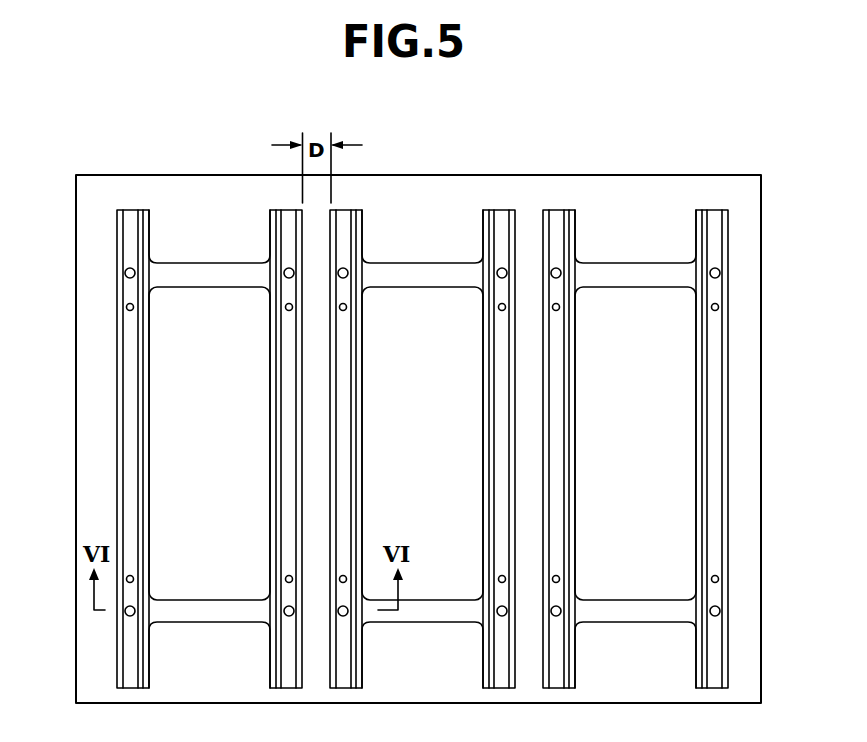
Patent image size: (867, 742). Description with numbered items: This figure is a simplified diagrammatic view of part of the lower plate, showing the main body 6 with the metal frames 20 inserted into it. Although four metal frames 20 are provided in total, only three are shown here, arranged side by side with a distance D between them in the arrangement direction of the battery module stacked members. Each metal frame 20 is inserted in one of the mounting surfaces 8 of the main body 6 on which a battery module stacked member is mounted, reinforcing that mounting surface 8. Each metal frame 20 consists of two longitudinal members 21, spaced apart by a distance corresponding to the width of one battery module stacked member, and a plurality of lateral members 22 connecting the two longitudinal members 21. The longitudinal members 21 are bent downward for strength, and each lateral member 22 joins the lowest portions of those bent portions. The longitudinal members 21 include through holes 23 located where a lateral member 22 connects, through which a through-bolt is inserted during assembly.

The main body 6 is at (571, 166).
The metal frame 20 is at (422, 392).
The longitudinal member 21 is at (288, 433).
The lateral member 22 is at (222, 272).
The mounting surface 8 is at (197, 372).
The through hole 23 is at (135, 612).